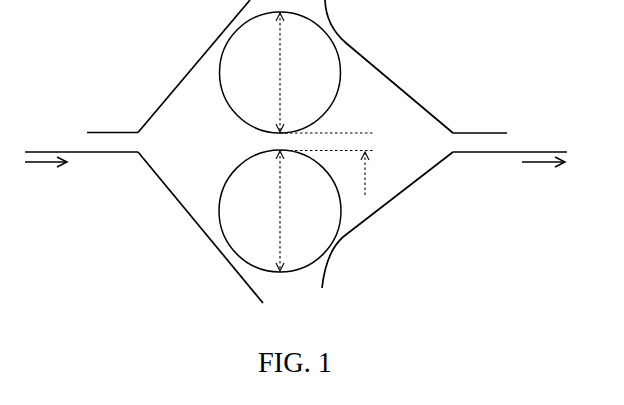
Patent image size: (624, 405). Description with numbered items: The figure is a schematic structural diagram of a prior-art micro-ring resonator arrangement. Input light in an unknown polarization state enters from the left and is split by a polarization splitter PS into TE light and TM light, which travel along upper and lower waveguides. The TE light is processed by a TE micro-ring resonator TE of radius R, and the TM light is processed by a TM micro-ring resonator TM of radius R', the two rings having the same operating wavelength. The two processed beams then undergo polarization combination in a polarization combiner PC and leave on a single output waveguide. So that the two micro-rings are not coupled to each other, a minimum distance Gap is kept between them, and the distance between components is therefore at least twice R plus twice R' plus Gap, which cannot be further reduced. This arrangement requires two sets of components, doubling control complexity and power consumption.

The polarization splitter PS is at (144, 151).
The polarization combiner PC is at (444, 144).
The TE micro-ring resonator TE is at (280, 72).
The TM micro-ring resonator TM is at (280, 211).
The minimum distance between micro-rings Gap is at (345, 164).